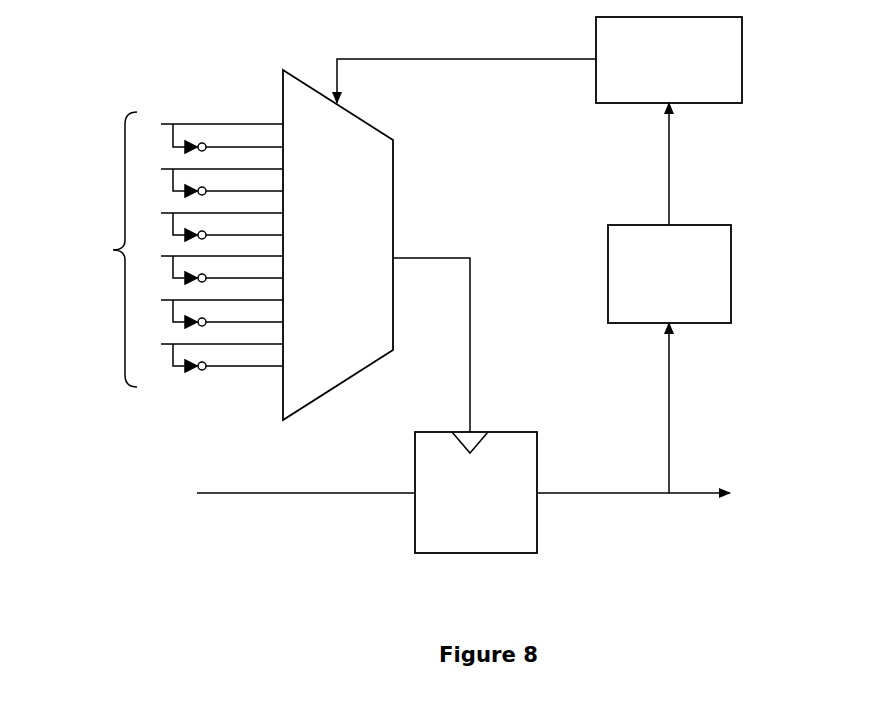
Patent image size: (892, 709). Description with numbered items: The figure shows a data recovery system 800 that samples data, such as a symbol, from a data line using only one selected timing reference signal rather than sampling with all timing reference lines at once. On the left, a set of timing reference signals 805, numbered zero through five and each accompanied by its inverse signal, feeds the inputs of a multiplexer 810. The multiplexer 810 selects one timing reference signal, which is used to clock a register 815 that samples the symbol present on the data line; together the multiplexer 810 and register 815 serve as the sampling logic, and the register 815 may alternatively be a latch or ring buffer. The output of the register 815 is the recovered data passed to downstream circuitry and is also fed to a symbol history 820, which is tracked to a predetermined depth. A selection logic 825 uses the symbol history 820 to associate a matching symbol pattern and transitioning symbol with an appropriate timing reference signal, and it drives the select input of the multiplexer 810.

The data recovery system 800 is at (206, 69).
The timing reference signals 805 is at (148, 249).
The multiplexer 810 is at (362, 283).
The register 815 is at (475, 553).
The symbol history 820 is at (731, 273).
The selection logic 825 is at (742, 60).